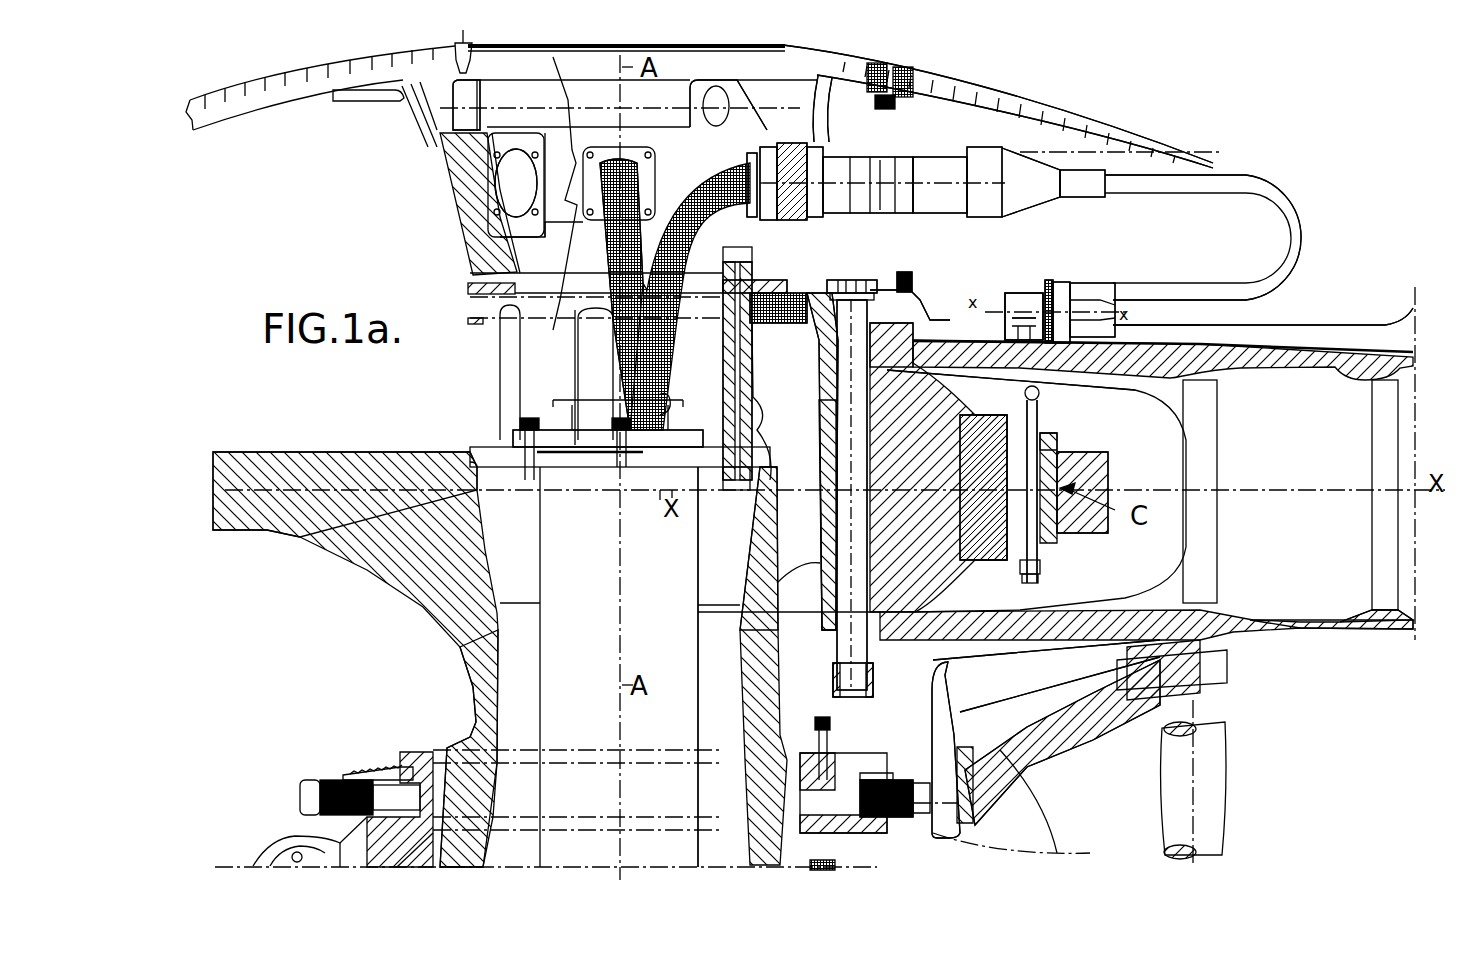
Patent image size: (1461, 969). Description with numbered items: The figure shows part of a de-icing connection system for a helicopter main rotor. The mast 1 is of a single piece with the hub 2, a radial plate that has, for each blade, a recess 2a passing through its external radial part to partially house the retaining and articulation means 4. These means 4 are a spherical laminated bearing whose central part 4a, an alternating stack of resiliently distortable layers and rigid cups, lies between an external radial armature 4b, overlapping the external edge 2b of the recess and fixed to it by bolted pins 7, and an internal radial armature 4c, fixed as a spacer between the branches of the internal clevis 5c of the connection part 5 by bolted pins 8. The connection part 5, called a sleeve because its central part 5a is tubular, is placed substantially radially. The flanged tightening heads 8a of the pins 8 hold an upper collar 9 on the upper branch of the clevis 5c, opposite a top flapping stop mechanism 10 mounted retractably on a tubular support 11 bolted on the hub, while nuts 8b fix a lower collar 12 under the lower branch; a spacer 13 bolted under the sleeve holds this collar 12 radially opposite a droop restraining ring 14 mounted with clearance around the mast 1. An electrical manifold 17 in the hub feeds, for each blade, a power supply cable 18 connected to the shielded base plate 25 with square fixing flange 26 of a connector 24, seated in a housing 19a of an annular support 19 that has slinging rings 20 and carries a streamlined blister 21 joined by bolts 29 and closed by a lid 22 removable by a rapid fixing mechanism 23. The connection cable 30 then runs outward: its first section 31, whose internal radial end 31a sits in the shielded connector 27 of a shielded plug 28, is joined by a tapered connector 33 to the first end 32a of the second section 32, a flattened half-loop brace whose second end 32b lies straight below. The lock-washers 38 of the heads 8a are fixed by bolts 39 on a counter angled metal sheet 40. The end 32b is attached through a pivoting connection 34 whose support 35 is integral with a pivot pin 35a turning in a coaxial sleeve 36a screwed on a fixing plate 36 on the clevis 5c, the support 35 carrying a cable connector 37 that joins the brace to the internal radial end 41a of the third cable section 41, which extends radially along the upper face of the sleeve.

The mast 1 is at (472, 682).
The hub 2 is at (378, 570).
The recess 2a is at (800, 505).
The external edge of the recess 2b is at (1090, 470).
The retaining and articulation means 4 is at (1003, 642).
The central part 4a is at (1060, 436).
The external radial armature 4b is at (952, 572).
The internal radial armature 4c is at (820, 421).
The connection part 5 is at (1305, 625).
The central part 5a is at (1385, 624).
The internal clevis 5c is at (830, 378).
The bolted pins 7 is at (1055, 535).
The bolted pins 8 is at (847, 523).
The tightening heads 8a is at (857, 293).
The nuts 8b is at (870, 687).
The upper collar 9 is at (827, 297).
The top flapping stop mechanism 10 is at (795, 326).
The tubular support 11 is at (723, 335).
The lower collar 12 is at (945, 767).
The spacer 13 is at (1020, 747).
The droop restraining ring 14 is at (897, 817).
The electrical manifold 17 is at (678, 457).
The electrical power supply cable 18 is at (724, 185).
The annular support 19 is at (455, 155).
The housing 19a is at (503, 176).
The slinging rings 20 is at (453, 108).
The streamlined blister 21 is at (287, 105).
The fixed lid 22 is at (540, 47).
The rapid fixing mechanism 23 is at (398, 97).
The connector 24 is at (808, 155).
The shielded base plate 25 is at (753, 207).
The square fixing flange 26 is at (763, 193).
The shielded connector 27 is at (835, 173).
The shielded plug 28 is at (807, 200).
The bolts 29 is at (928, 103).
The connection cable 30 is at (1333, 270).
The first section 31 is at (940, 170).
The internal radial end 31a is at (840, 190).
The second section 32 is at (1268, 185).
The first end 32a is at (1075, 183).
The second end 32b is at (1100, 292).
The connector 33 is at (1030, 178).
The connection 34 is at (1027, 295).
The support 35 is at (1050, 290).
The pivot pin 35a is at (1025, 300).
The fixing plate 36 is at (953, 337).
The coaxial sleeve 36a is at (1010, 320).
The cable connector 37 is at (1060, 290).
The lock-washers 38 is at (887, 285).
The bolts 39 is at (905, 283).
The counter angled metal sheet 40 is at (883, 300).
The third cable section 41 is at (1353, 338).
The internal radial end 41a is at (1093, 350).